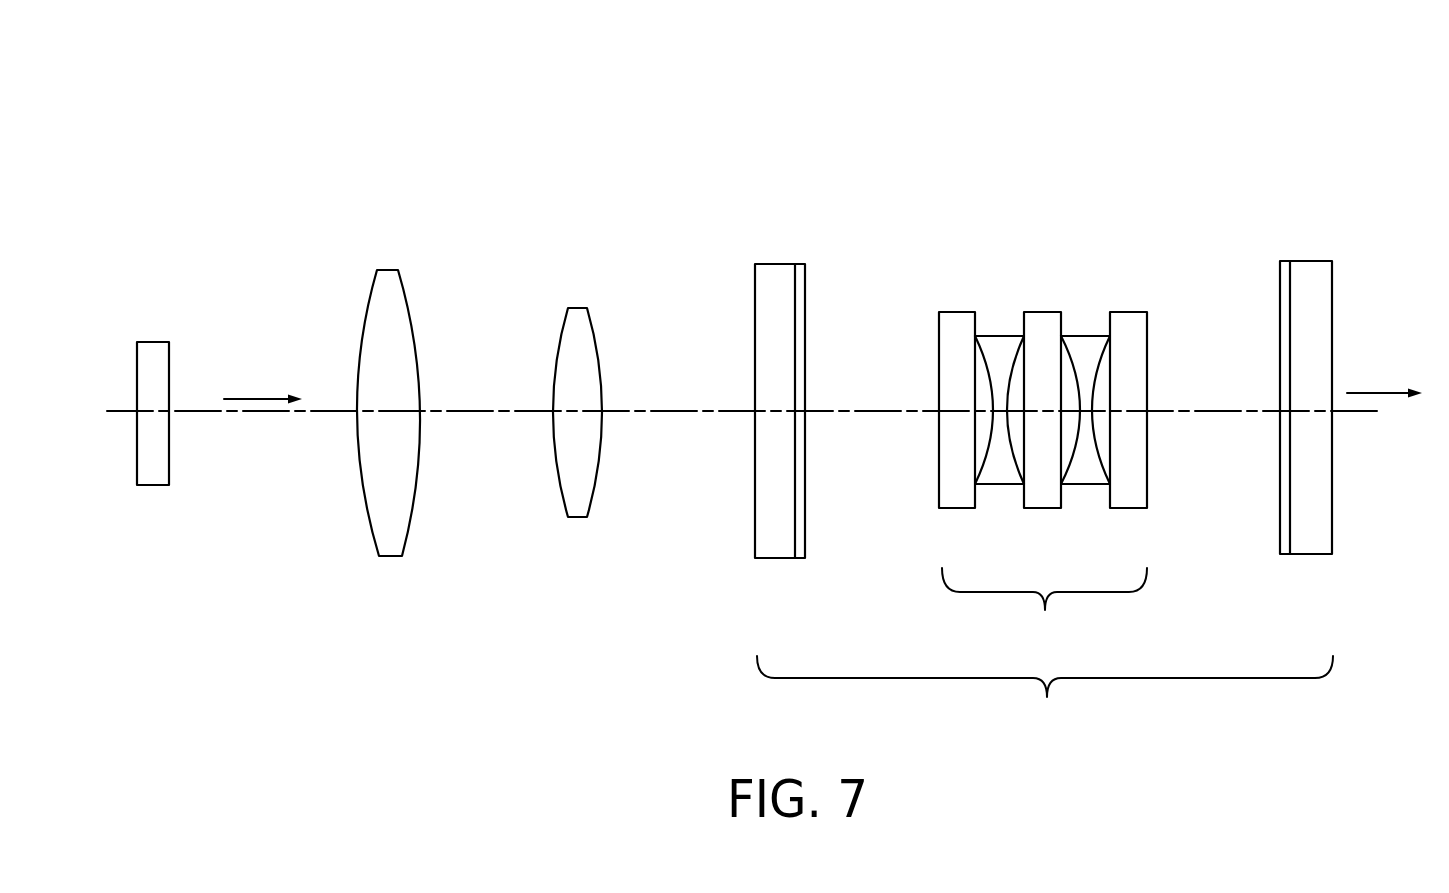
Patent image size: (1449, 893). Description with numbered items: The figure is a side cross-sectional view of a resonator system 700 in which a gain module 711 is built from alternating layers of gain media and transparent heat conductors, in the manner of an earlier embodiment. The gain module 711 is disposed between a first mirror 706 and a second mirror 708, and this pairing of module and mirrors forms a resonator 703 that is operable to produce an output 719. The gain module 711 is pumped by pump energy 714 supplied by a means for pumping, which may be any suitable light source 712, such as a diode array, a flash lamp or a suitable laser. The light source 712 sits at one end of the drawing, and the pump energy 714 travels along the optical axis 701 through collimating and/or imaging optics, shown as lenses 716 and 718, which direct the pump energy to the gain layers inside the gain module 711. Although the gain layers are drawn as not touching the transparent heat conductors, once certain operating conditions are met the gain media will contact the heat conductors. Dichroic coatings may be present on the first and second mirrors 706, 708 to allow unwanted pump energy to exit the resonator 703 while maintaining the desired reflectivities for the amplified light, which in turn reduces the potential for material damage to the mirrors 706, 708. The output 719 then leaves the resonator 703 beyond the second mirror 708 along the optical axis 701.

The resonator system 700 is at (420, 128).
The optical axis 701 is at (472, 411).
The resonator 703 is at (1045, 698).
The first mirror 706 is at (755, 293).
The second mirror 708 is at (1332, 278).
The gain module 711 is at (1044, 610).
The light source 712 is at (150, 342).
The pump energy 714 is at (255, 399).
The lens 716 is at (387, 270).
The lens 718 is at (578, 308).
The output 719 is at (1375, 393).